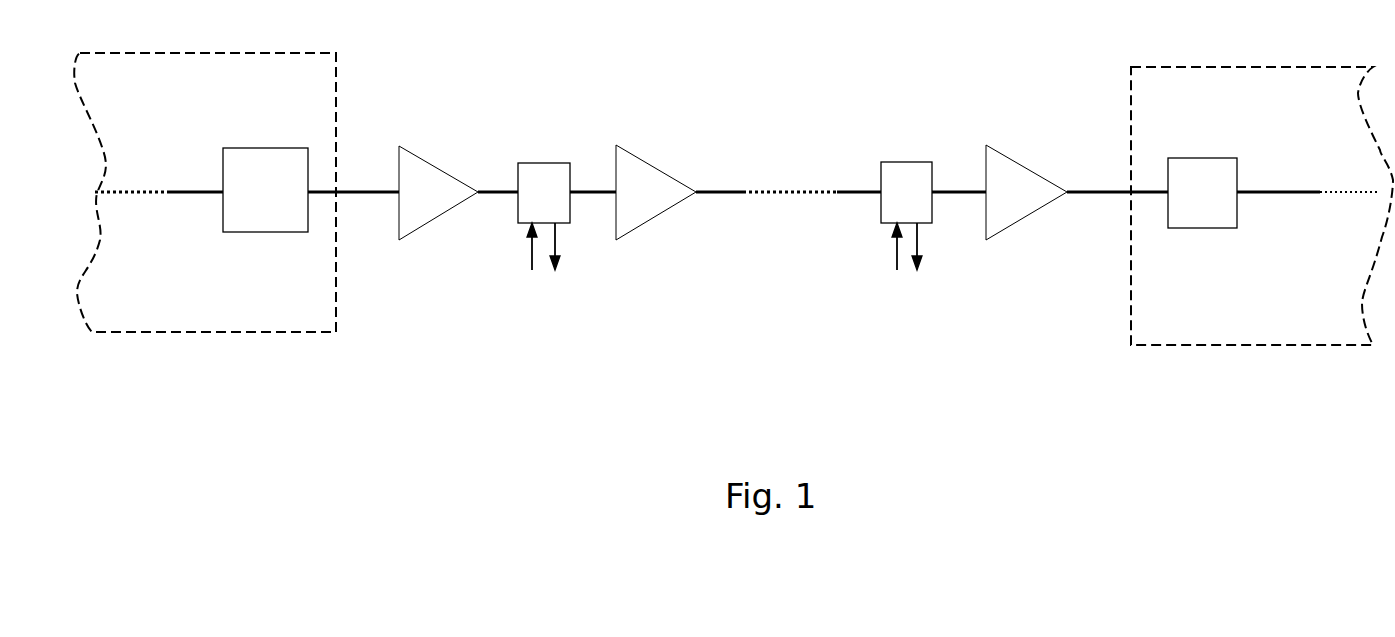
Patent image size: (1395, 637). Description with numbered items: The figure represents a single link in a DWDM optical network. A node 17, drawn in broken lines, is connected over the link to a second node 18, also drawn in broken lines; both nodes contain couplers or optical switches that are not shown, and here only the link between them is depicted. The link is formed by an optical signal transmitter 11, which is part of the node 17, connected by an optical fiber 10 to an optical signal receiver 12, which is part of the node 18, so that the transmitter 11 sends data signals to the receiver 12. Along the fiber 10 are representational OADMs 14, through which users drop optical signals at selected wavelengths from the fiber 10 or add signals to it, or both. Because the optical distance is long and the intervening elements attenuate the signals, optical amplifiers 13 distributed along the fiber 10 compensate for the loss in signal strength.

The optical fiber 10 is at (355, 192).
The optical signal transmitter 11 is at (260, 148).
The optical signal receiver 12 is at (1193, 158).
The optical amplifier 13 is at (615, 163).
The OADM (Optical Add/Drop Multiplexer) 14 is at (518, 209).
The node 17 is at (281, 316).
The second node 18 is at (1303, 328).